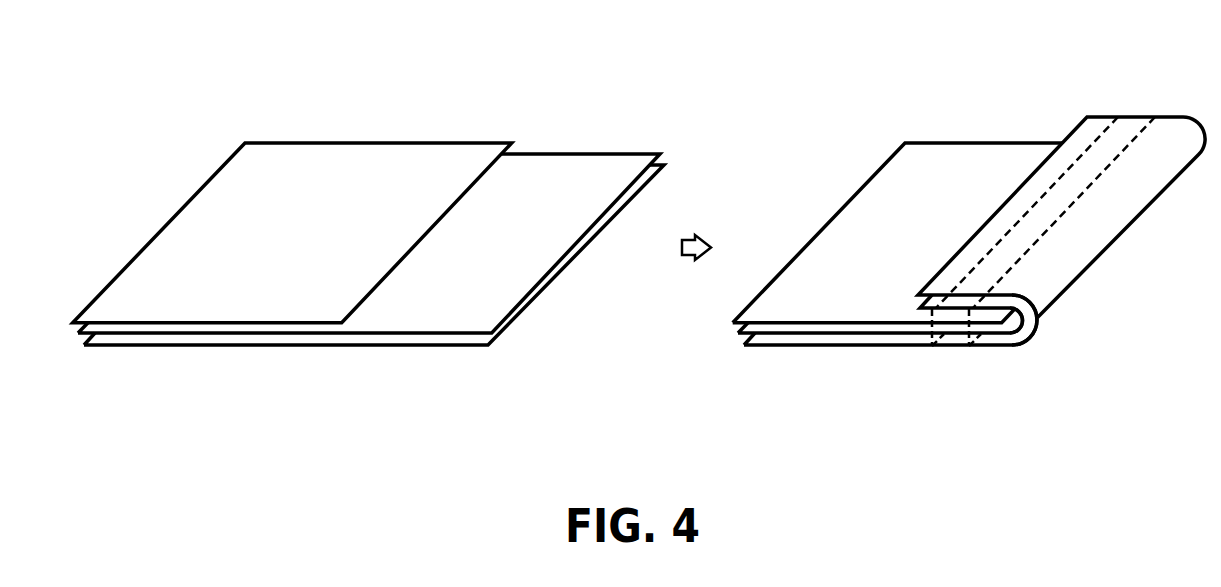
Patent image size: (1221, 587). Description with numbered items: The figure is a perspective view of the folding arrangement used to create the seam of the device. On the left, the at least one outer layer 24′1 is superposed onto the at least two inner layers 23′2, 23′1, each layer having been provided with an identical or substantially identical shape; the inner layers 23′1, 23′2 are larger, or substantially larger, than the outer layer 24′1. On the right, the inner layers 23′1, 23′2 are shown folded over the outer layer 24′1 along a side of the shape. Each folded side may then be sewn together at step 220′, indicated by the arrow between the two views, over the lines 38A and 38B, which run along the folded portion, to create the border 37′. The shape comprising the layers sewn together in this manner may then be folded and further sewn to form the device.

The outer layer 24′1 is at (243, 325).
The inner layer 23′2 is at (393, 332).
The inner layer 23′1 is at (448, 347).
The border 37′ is at (1081, 228).
The line 38A is at (1120, 117).
The line 38B is at (1155, 117).
The sewing step 220′ is at (686, 260).